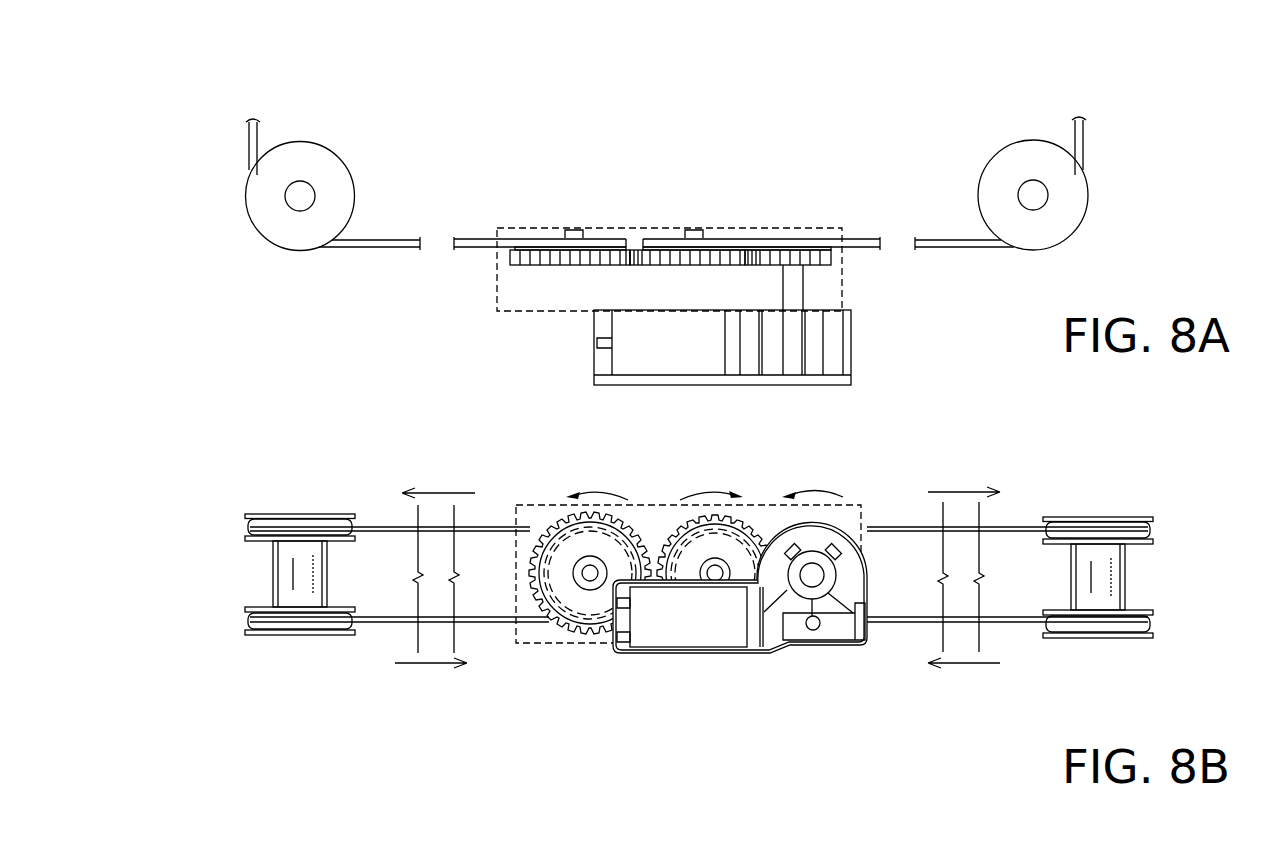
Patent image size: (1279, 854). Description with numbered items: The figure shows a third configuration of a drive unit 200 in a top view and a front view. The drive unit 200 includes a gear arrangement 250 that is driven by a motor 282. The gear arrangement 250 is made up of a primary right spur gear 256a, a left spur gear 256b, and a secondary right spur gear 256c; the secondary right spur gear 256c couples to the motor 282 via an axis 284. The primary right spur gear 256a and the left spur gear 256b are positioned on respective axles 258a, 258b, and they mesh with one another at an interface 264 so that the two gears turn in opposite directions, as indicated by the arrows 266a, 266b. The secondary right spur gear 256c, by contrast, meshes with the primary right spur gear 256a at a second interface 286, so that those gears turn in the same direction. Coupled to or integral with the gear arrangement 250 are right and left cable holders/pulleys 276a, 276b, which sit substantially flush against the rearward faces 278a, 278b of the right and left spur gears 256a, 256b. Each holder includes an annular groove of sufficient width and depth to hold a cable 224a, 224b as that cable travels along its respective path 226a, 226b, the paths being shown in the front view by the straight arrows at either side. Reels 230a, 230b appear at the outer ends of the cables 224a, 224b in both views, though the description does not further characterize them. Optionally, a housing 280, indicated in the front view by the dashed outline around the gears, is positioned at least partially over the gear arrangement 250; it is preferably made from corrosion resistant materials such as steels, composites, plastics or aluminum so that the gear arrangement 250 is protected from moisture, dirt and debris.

In FIG. 8A, the drive unit 200 is at (165, 105).
In FIG. 8B, the drive unit 200 is at (165, 483).
In FIG. 8B, the cable 224a is at (1020, 628).
In FIG. 8B, the cable 224b is at (380, 623).
In FIG. 8B, the path 226a is at (982, 483).
In FIG. 8B, the path 226b is at (427, 483).
In FIG. 8A, the first reel 230a is at (1072, 207).
In FIG. 8B, the first reel 230a is at (1132, 515).
In FIG. 8A, the second reel 230b is at (265, 226).
In FIG. 8B, the second reel 230b is at (245, 632).
In FIG. 8A, the gear arrangement 250 is at (432, 298).
In FIG. 8B, the gear arrangement 250 is at (584, 688).
In FIG. 8A, the primary right spur gear 256a is at (673, 260).
In FIG. 8A, the left spur gear 256b is at (543, 263).
In FIG. 8A, the secondary right spur gear 256c is at (817, 255).
In FIG. 8A, the axle 258a is at (698, 235).
In FIG. 8A, the axle 258b is at (573, 235).
In FIG. 8B, the interface 264 is at (657, 520).
In FIG. 8B, the arrow 266a is at (703, 490).
In FIG. 8B, the arrow 266b is at (600, 490).
In FIG. 8A, the right cable holder/pulley 276a is at (675, 237).
In FIG. 8A, the left cable holder/pulley 276b is at (607, 237).
In FIG. 8A, the rearward face 278a is at (742, 248).
In FIG. 8A, the rearward face 278b is at (527, 248).
In FIG. 8B, the housing 280 is at (520, 645).
In FIG. 8A, the motor 282 is at (837, 385).
In FIG. 8B, the motor 282 is at (687, 655).
In FIG. 8A, the axis 284 is at (797, 287).
In FIG. 8A, the second interface 286 is at (757, 263).